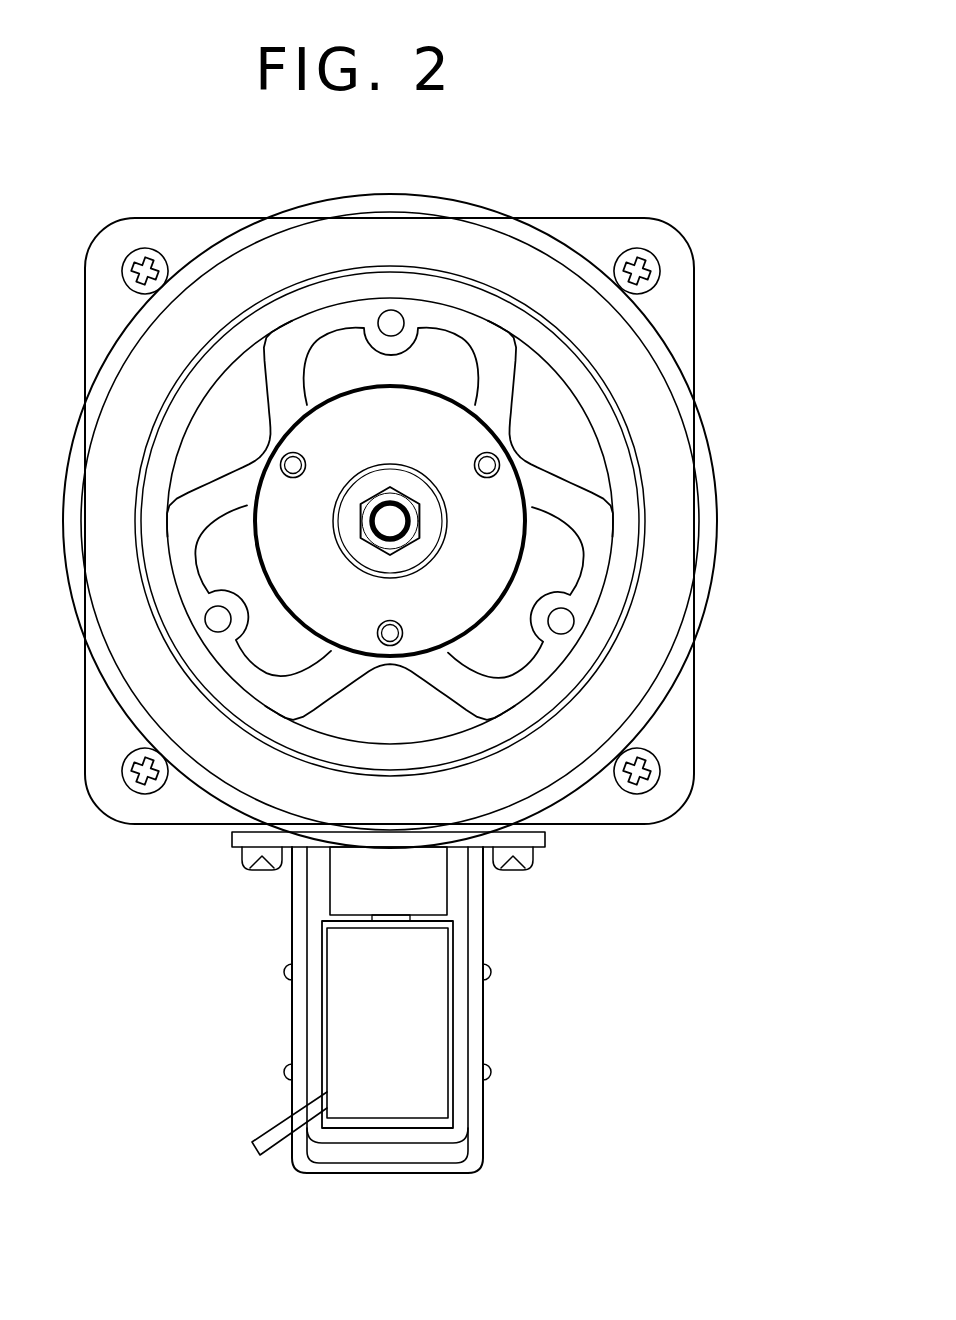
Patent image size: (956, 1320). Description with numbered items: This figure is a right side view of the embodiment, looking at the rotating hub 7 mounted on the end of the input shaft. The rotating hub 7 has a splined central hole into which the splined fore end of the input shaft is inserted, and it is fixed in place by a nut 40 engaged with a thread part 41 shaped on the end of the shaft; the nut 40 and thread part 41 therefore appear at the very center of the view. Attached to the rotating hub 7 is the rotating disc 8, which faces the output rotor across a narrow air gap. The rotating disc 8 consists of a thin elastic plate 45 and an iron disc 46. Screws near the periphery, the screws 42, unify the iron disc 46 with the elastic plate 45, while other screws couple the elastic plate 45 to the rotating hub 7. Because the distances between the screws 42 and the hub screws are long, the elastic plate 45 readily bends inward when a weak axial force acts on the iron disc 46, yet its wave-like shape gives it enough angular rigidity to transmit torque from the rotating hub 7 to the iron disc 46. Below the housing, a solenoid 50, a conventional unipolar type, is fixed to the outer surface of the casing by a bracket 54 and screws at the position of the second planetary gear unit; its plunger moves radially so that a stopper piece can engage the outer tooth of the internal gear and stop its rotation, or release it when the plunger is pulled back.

The rotating hub 7 is at (457, 435).
The rotating disc 8 is at (500, 521).
The nut 40 is at (415, 502).
The thread part 41 is at (393, 528).
The screws 42 is at (392, 320).
The elastic plate 45 is at (578, 601).
The iron disc 46 is at (518, 653).
The solenoid 50 is at (418, 996).
The bracket 54 is at (474, 1100).